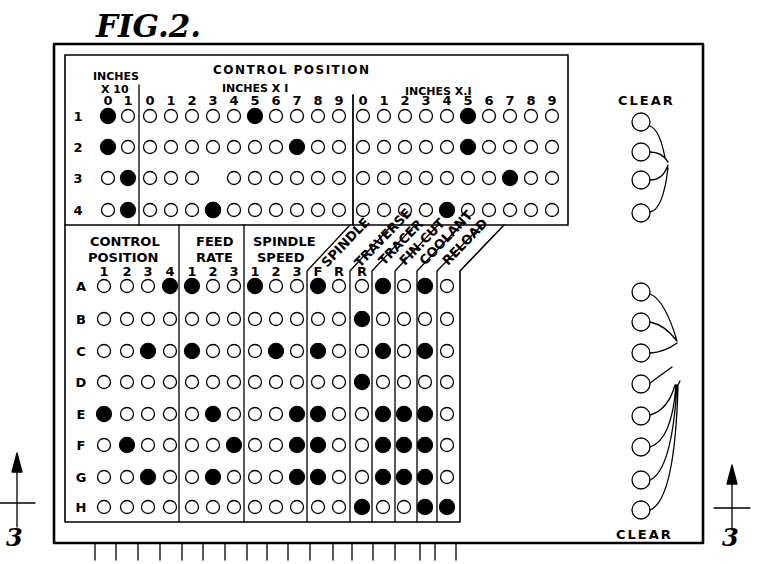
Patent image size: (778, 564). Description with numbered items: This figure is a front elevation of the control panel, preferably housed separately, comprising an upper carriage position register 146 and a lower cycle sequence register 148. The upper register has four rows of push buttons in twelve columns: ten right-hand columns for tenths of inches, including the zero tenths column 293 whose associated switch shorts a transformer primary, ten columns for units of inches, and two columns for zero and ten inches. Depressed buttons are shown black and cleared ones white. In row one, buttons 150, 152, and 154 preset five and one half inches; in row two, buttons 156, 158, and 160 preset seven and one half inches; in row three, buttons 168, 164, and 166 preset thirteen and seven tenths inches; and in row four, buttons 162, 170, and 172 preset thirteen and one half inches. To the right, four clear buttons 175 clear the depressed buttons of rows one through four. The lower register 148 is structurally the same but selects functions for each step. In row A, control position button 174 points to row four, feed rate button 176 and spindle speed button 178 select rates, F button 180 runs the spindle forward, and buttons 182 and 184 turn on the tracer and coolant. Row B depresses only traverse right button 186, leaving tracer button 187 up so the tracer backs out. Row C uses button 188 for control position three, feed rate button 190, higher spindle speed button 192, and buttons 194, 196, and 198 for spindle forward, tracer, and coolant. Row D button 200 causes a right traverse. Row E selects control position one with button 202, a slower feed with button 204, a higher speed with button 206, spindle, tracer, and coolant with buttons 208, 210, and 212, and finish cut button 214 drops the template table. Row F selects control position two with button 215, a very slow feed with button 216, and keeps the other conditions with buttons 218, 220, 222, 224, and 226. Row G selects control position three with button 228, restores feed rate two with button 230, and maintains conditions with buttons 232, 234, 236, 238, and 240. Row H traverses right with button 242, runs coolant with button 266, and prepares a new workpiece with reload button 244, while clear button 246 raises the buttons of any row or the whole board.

The carriage position register 146 is at (616, 165).
The cycle sequence register 148 is at (622, 401).
The push button 150 is at (107, 124).
The push button 152 is at (256, 123).
The push button 154 is at (468, 123).
The push button 156 is at (104, 153).
The push button 158 is at (297, 154).
The push button 160 is at (468, 154).
The push button 162 is at (131, 206).
The push button 164 is at (212, 203).
The push button 166 is at (510, 185).
The push button 168 is at (123, 184).
The push button 170 is at (220, 206).
The push button 172 is at (452, 206).
The column 4 button 174 is at (171, 294).
The clear buttons 175 is at (668, 163).
The feed rate button 176 is at (190, 294).
The spindle speed button 178 is at (254, 294).
The F button 180 is at (316, 294).
The tracer button 182 is at (382, 294).
The coolant button 184 is at (424, 294).
The traverse right button 186 is at (357, 326).
The push button 187 is at (378, 326).
The control position 3 button 188 is at (154, 356).
The feed rate button 190 is at (190, 358).
The column 2 spindle speed button 192 is at (276, 358).
The spindle forward button 194 is at (316, 358).
The tracer button 196 is at (382, 358).
The coolant button 198 is at (424, 358).
The traverse right button 200 is at (361, 389).
The control position 1 button 202 is at (104, 421).
The feed rate button 204 is at (212, 421).
The spindle speed button 206 is at (295, 421).
The spindle forward button 208 is at (318, 421).
The tracer button 210 is at (383, 421).
The coolant button 212 is at (425, 421).
The finish cut button 214 is at (404, 421).
The control position 2 button 215 is at (131, 441).
The feed rate button 216 is at (233, 452).
The spindle speed button 218 is at (295, 452).
The spindle forward button 220 is at (316, 452).
The tracer button 222 is at (382, 452).
The finish cut button 224 is at (404, 452).
The coolant button 226 is at (425, 452).
The control position 3 button 228 is at (154, 483).
The feed rate button 230 is at (217, 483).
The spindle speed button 232 is at (294, 484).
The spindle forward button 234 is at (318, 484).
The tracer button 236 is at (383, 484).
The finish cut button 238 is at (404, 484).
The coolant button 240 is at (425, 484).
The traverse right button 242 is at (361, 493).
The reload button 244 is at (455, 507).
The clear button 246 is at (674, 402).
The coolant button 266 is at (423, 515).
The 0 tenths column 293 is at (357, 96).